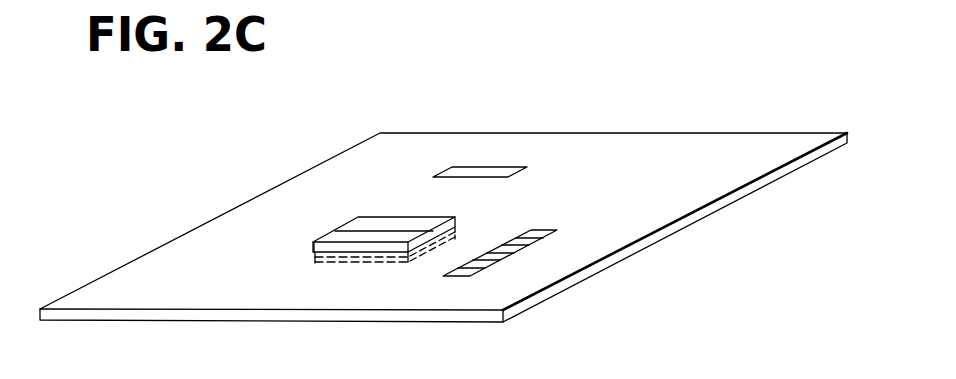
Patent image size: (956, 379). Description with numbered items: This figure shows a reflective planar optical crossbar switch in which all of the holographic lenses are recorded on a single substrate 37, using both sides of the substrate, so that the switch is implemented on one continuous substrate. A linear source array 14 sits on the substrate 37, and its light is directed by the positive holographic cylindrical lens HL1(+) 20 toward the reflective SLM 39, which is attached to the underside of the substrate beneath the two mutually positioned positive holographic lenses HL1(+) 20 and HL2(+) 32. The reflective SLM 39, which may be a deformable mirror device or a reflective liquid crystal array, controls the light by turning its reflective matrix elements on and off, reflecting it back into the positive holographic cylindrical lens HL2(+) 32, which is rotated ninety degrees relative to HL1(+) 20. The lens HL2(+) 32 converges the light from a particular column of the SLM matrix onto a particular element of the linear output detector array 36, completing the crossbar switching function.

The linear source array 14 is at (500, 158).
The positive holographic cylindrical lens HL1(+) 20 is at (343, 232).
The positive holographic cylindrical lens HL2(+) 32 is at (310, 248).
The linear output detector array 36 is at (550, 218).
The single substrate 37 is at (730, 146).
The reflective SLM 39 is at (315, 262).